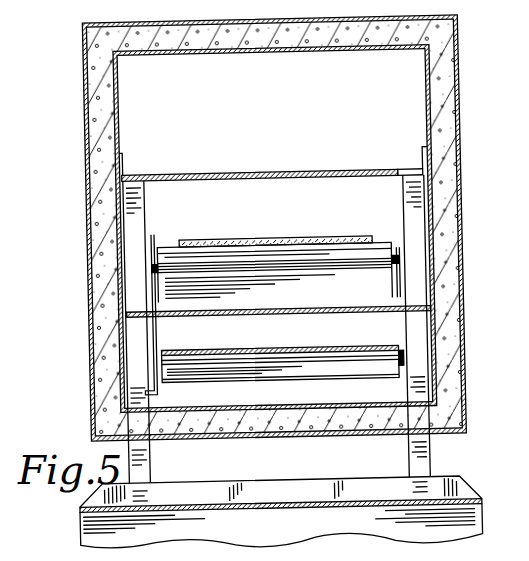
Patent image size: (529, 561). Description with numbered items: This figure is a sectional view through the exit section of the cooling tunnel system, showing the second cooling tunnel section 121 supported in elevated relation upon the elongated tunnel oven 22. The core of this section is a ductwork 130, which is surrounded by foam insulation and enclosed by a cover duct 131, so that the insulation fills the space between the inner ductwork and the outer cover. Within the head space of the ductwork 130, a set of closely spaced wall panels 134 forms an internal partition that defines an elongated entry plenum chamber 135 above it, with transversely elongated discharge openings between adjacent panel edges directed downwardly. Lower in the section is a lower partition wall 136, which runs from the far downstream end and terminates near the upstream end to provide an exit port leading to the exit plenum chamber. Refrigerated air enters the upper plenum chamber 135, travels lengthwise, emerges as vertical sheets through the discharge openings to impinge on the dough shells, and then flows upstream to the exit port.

The tunnel oven 22 is at (290, 541).
The second cooling tunnel section 121 is at (88, 272).
The ductwork 130 is at (108, 127).
The cover duct 131 is at (84, 97).
The wall panels 134 is at (253, 170).
The entry plenum chamber 135 is at (394, 116).
The lower partition wall 136 is at (276, 309).